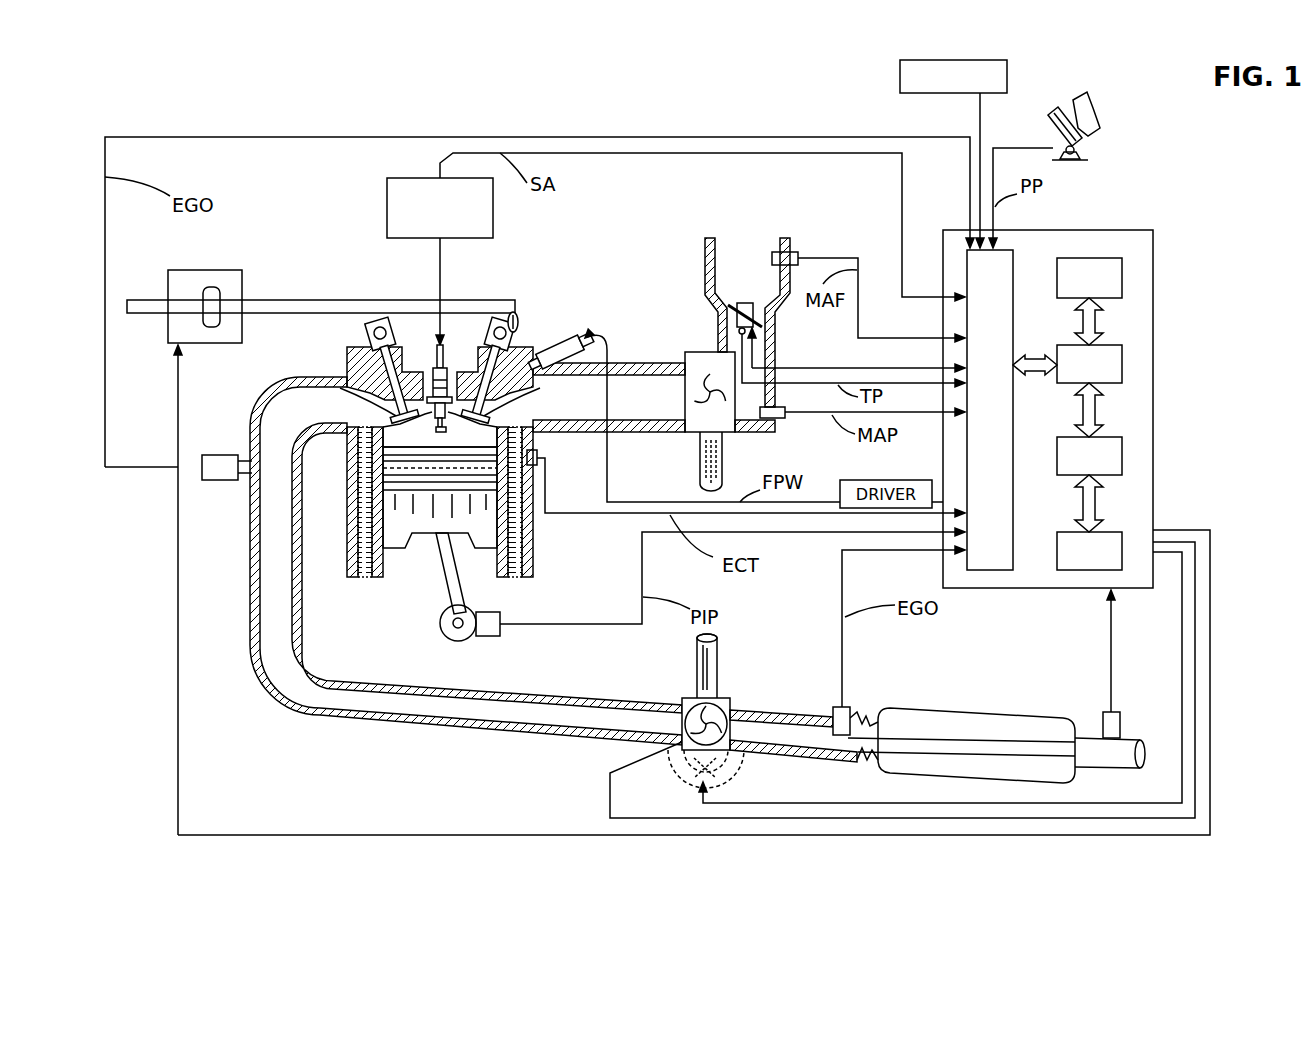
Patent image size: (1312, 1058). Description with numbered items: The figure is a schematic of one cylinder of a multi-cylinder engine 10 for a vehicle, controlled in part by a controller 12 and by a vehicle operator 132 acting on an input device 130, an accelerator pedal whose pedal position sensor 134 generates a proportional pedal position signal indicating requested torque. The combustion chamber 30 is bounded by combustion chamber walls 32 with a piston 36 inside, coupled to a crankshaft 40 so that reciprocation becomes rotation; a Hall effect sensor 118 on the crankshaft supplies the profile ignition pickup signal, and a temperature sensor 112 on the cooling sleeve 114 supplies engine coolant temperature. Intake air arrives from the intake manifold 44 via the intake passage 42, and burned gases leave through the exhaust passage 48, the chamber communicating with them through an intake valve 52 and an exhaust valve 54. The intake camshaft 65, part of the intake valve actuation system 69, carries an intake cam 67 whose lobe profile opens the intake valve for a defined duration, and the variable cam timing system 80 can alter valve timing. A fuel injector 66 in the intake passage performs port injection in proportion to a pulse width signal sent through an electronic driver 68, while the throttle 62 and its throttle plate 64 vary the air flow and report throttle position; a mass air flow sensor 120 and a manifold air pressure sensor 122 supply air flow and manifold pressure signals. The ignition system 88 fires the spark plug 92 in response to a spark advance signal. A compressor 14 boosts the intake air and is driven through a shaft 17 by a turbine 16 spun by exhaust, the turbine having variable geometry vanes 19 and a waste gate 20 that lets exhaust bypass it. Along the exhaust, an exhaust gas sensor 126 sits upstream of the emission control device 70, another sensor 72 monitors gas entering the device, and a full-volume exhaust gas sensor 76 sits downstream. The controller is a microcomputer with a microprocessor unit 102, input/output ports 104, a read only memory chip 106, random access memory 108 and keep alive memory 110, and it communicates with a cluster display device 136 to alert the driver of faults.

The engine 10 is at (176, 117).
The controller 12 is at (1089, 397).
The compressor 14 is at (685, 352).
The turbine 16 is at (690, 700).
The shaft 17 is at (720, 688).
The variable geometry vanes 19 is at (717, 750).
The waste gate 20 is at (697, 775).
The combustion chamber 30 is at (437, 440).
The combustion chamber walls 32 is at (383, 565).
The piston 36 is at (440, 525).
The crankshaft 40 is at (449, 641).
The intake passage 42 is at (760, 285).
The intake manifold 44 is at (670, 412).
The exhaust passage 48 is at (331, 415).
The intake valve 52 is at (478, 413).
The exhaust valve 54 is at (403, 420).
The throttle 62 is at (765, 313).
The throttle plate 64 is at (726, 312).
The intake camshaft 65 is at (288, 302).
The fuel injector 66 is at (563, 347).
The intake cam 67 is at (514, 308).
The electronic driver 68 is at (607, 450).
The intake valve actuation system 69 is at (321, 517).
The emission control device 70 is at (1040, 718).
The sensor 72 is at (850, 707).
The full-volume exhaust gas sensor 76 is at (1115, 712).
The variable cam timing system 80 is at (200, 345).
The ignition system 88 is at (392, 178).
The spark plug 92 is at (443, 366).
The microprocessor unit 102 is at (1125, 357).
The input/output ports 104 is at (1015, 258).
The read only memory chip 106 is at (1125, 272).
The random access memory 108 is at (1125, 452).
The keep alive memory 110 is at (1123, 547).
The temperature sensor 112 is at (540, 467).
The cooling sleeve 114 is at (522, 527).
The Hall effect sensor 118 is at (490, 638).
The mass air flow sensor 120 is at (796, 252).
The manifold air pressure sensor 122 is at (788, 420).
The exhaust gas sensor 126 is at (202, 462).
The input device 130 is at (1101, 170).
The vehicle operator 132 is at (1095, 112).
The pedal position sensor 134 is at (1080, 147).
The cluster display device 136 is at (900, 78).